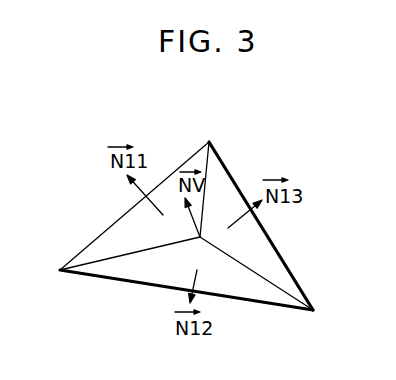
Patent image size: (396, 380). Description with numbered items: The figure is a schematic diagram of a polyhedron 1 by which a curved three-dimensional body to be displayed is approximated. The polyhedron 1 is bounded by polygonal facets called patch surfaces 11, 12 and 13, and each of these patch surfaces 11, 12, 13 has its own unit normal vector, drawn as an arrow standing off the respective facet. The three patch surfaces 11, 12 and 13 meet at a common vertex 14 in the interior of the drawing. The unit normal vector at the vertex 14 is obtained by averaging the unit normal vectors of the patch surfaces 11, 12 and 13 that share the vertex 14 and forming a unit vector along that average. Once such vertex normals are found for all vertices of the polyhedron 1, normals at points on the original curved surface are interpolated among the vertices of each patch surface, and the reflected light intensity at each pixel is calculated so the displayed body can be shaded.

The polyhedron 1 is at (198, 246).
The patch surface 11 is at (125, 228).
The patch surface 12 is at (233, 288).
The patch surface 13 is at (261, 252).
The vertex 14 is at (193, 247).